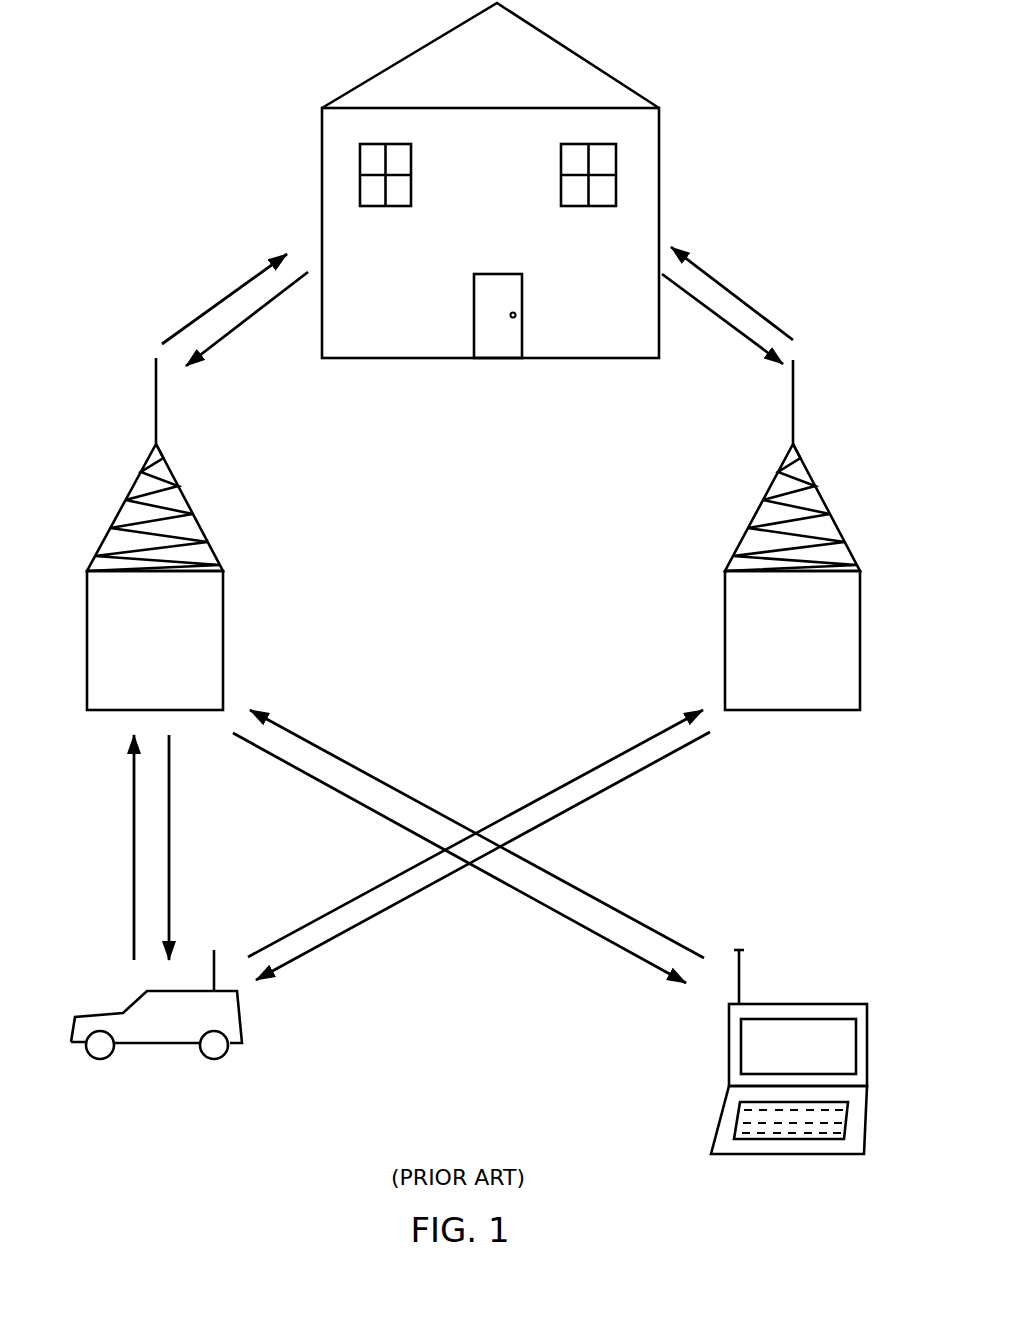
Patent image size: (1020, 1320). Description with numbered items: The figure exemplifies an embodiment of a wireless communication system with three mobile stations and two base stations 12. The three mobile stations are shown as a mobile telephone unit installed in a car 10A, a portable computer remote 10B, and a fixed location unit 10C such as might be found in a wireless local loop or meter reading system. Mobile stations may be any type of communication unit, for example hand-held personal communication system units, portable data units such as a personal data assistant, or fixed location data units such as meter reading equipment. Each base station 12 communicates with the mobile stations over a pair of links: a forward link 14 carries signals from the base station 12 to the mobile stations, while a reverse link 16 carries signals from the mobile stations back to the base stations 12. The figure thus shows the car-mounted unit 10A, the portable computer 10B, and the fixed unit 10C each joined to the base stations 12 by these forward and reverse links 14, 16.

The mobile telephone unit installed in a car 10A is at (114, 1012).
The portable computer remote 10B is at (843, 1003).
The fixed location unit 10C is at (560, 43).
The base station 12 is at (122, 505).
The forward link 14 is at (240, 284).
The reverse link 16 is at (260, 312).